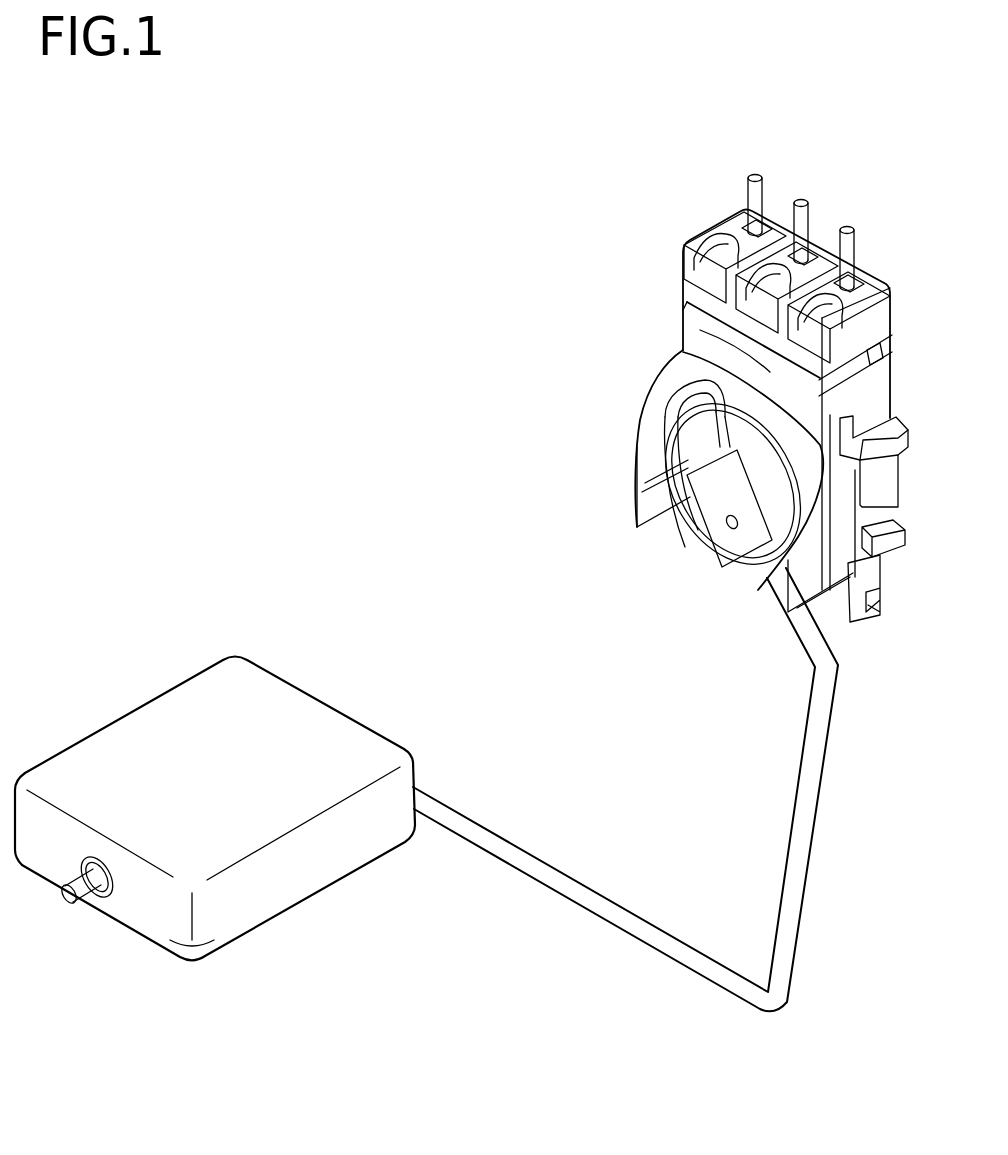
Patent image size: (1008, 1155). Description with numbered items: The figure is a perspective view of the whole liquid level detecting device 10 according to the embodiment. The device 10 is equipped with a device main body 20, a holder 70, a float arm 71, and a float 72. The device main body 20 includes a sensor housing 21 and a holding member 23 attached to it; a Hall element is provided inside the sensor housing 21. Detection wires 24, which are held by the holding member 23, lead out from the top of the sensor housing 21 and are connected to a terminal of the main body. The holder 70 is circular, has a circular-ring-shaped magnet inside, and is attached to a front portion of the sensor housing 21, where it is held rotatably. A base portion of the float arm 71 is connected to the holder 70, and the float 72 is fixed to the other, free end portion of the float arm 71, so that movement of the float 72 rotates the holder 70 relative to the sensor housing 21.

The liquid level detecting device 10 is at (391, 217).
The device main body 20 is at (678, 195).
The sensor housing 21 is at (619, 421).
The holding member 23 is at (708, 322).
The detection wires 24 is at (763, 195).
The holder 70 is at (725, 568).
The float arm 71 is at (620, 952).
The float 72 is at (302, 893).